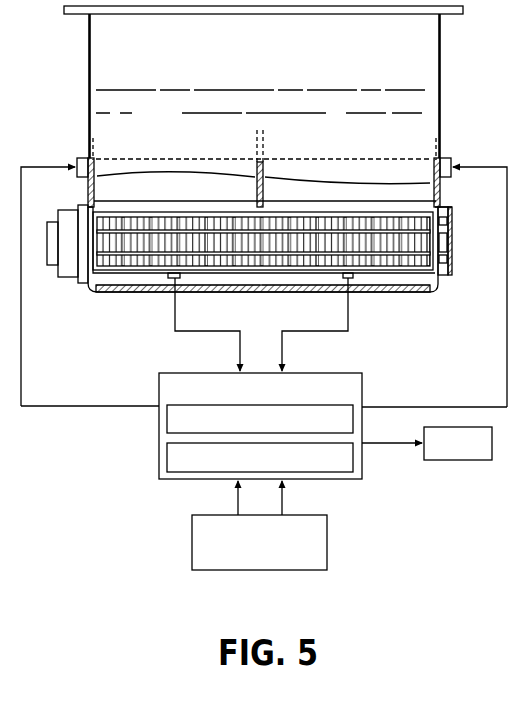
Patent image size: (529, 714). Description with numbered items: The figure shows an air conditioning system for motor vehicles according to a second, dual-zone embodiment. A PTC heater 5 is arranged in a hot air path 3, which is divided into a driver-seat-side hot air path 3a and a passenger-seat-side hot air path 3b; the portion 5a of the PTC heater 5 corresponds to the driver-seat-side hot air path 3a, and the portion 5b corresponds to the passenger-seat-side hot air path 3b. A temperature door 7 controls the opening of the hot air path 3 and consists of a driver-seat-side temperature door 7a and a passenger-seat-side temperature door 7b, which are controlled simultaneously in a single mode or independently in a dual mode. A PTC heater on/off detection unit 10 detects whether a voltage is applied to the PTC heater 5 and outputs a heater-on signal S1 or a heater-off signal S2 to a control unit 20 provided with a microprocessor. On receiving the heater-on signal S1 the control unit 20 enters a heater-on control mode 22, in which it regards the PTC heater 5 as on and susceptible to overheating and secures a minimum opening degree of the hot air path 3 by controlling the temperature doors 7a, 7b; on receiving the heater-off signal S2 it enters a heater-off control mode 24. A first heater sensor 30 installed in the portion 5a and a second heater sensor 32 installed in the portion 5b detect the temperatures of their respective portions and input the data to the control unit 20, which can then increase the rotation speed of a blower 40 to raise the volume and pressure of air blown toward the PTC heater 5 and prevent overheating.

The hot air path 3 is at (263, 269).
The driver-seat-side hot air path 3a is at (198, 282).
The passenger-seat-side hot air path 3b is at (329, 281).
The PTC heater 5 is at (249, 278).
The portion of the PTC heater 5a is at (138, 280).
The portion of the PTC heater 5b is at (385, 282).
The temperature door 7 is at (264, 182).
The driver-seat-side temperature door 7a is at (100, 182).
The passenger-seat-side temperature door 7b is at (422, 196).
The PTC heater on/off detection unit 10 is at (261, 545).
The control unit 20 is at (282, 426).
The heater-on control mode 22 is at (354, 418).
The heater-off control mode 24 is at (354, 453).
The first heater sensor 30 is at (163, 280).
The second heater sensor 32 is at (352, 282).
The blower 40 is at (458, 461).
The heater-on signal S1 is at (238, 501).
The heater-off signal S2 is at (282, 500).